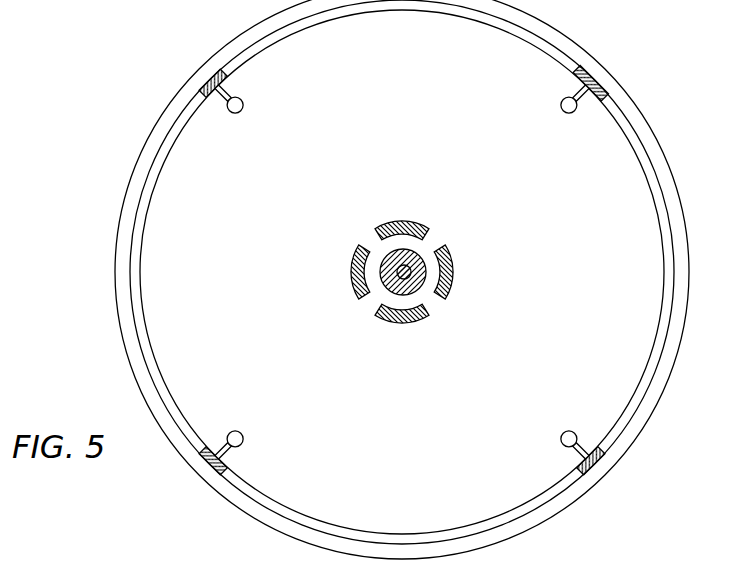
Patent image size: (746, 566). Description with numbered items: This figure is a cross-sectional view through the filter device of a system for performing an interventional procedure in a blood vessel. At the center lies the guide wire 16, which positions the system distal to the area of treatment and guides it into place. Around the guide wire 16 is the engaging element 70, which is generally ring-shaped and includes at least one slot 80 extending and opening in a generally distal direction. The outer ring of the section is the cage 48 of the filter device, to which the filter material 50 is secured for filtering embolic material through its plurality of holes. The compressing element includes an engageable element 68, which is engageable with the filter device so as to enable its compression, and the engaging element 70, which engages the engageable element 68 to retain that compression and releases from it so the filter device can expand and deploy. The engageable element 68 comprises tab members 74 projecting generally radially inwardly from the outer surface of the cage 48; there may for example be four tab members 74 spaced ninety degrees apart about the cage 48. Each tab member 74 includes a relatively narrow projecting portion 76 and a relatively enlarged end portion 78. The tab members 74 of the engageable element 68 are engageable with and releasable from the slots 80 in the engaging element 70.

The guide wire 16 is at (404, 272).
The cage 48 is at (663, 227).
The filter material 50 is at (574, 58).
The engageable element 68 is at (410, 308).
The engaging element 70 is at (460, 280).
The tab member 74 is at (578, 88).
The projecting portion 76 is at (587, 100).
The end portion 78 is at (573, 108).
The slot 80 is at (440, 312).